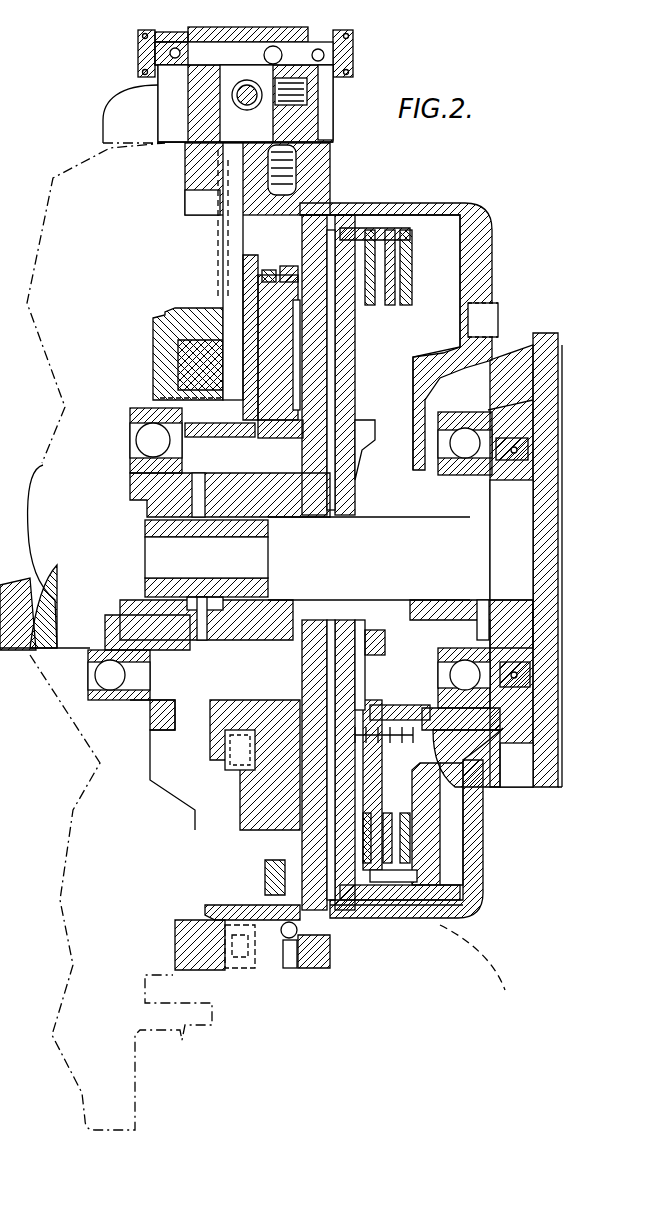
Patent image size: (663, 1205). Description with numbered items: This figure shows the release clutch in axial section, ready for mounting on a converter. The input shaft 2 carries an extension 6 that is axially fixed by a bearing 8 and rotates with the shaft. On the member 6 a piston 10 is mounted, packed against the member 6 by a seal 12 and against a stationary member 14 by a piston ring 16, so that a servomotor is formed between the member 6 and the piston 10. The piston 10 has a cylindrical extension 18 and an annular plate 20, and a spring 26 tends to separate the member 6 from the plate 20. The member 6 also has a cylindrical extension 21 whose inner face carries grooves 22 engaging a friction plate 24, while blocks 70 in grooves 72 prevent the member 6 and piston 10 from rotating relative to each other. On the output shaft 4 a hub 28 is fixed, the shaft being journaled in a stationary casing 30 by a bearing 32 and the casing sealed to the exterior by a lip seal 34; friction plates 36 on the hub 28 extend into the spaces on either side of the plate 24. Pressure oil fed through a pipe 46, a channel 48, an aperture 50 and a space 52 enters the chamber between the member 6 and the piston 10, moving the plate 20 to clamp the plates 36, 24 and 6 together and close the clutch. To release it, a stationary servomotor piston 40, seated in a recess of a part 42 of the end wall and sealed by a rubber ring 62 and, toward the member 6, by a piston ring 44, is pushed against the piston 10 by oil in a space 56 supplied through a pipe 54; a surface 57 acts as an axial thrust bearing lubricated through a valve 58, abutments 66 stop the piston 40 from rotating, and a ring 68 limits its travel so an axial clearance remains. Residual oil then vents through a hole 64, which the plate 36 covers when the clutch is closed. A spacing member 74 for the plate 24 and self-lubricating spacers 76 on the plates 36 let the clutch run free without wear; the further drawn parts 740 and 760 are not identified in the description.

The input shaft 2 is at (90, 625).
The output shaft 4 is at (541, 612).
The extension 6 is at (370, 450).
The bearing 8 is at (128, 672).
The piston 10 is at (310, 860).
The seal 12 is at (355, 920).
The stationary member 14 is at (260, 615).
The piston ring 16 is at (323, 700).
The cylindrical extension 18 is at (433, 925).
The annular plate 20 is at (440, 815).
The cylindrical extension 21 is at (413, 245).
The grooves 22 is at (388, 880).
The friction plate 24 is at (395, 850).
The spring 26 is at (463, 895).
The hub 28 is at (433, 470).
The stationary casing 30 is at (276, 930).
The bearing 32 is at (406, 700).
The lip seal 34 is at (530, 672).
The friction plates 36 is at (495, 770).
The servomotor piston 40 is at (275, 300).
The part 42 is at (243, 300).
The piston ring 44 is at (225, 460).
The pipe 46 is at (223, 212).
The channel 48 is at (220, 340).
The aperture 50 is at (206, 558).
The space 52 is at (291, 440).
The pipe 54 is at (222, 236).
The space 56 is at (235, 320).
The surface 57 is at (338, 450).
The valve 58 is at (230, 382).
The rubber ring 62 is at (268, 272).
The hole 64 is at (373, 895).
The abutments 66 is at (250, 810).
The ring 68 is at (294, 262).
The blocks 70 is at (394, 240).
The grooves 72 is at (346, 290).
The member 74 is at (480, 708).
The spacers 76 is at (368, 700).
The bearing housing 740 is at (470, 735).
The hub portion 760 is at (386, 600).